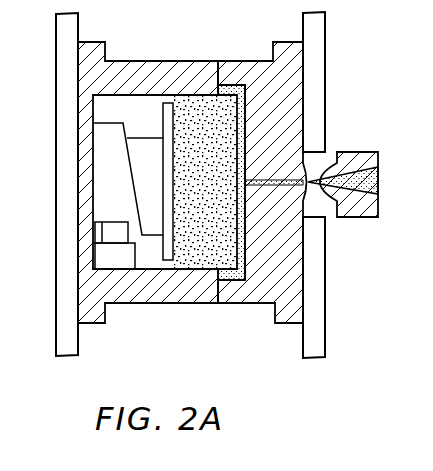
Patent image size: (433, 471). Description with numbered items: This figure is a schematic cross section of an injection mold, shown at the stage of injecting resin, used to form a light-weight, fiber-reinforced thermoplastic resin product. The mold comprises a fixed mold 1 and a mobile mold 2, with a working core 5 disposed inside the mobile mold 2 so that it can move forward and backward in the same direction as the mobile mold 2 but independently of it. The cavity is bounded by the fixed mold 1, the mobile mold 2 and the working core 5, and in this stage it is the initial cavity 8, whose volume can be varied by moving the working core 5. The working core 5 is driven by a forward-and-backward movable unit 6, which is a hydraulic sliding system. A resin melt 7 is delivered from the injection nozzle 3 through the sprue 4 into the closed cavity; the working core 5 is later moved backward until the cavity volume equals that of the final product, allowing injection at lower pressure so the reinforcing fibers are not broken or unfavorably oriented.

The fixed mold 1 is at (248, 61).
The mobile mold 2 is at (147, 61).
The injection nozzle 3 is at (370, 152).
The sprue 4 is at (272, 188).
The working core 5 is at (211, 176).
The forward-and-backward movable unit 6 is at (102, 152).
The resin melt 7 is at (378, 183).
The initial cavity 8 is at (243, 107).